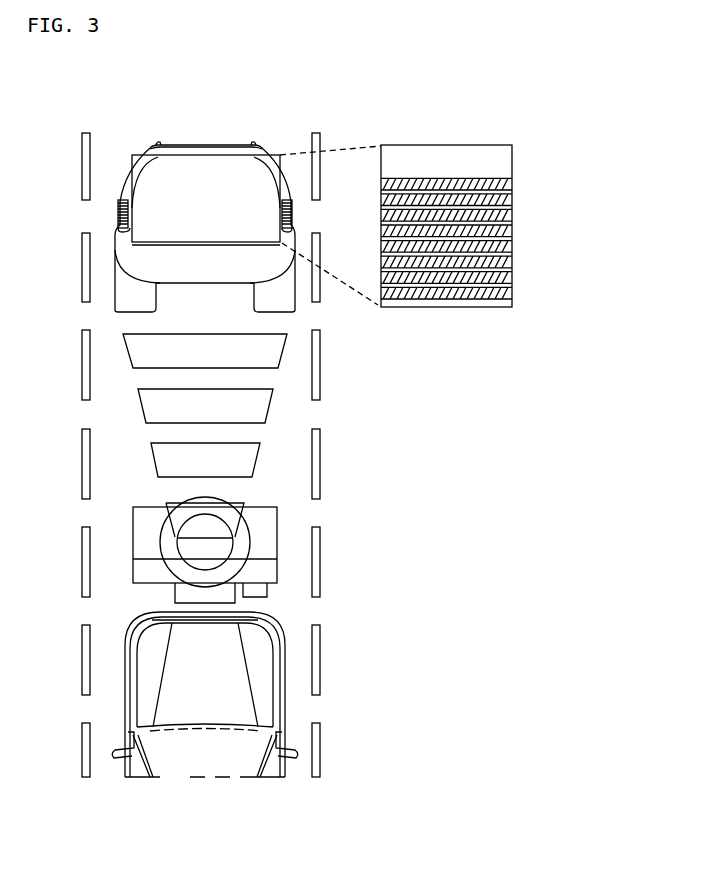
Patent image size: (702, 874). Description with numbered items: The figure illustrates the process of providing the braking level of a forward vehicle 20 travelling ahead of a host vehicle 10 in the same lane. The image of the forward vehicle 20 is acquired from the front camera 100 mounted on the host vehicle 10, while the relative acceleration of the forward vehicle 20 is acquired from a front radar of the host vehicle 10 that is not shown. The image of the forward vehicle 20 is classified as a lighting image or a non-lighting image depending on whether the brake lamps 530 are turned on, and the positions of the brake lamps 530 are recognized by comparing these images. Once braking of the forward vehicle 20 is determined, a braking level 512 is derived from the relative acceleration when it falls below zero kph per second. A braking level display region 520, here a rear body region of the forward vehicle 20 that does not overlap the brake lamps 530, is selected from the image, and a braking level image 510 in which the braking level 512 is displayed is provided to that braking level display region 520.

The host vehicle 10 is at (276, 614).
The forward vehicle 20 is at (130, 264).
The front camera 100 is at (278, 512).
The braking level image 510 is at (471, 202).
The braking level 512 is at (476, 178).
The braking level display region 520 is at (274, 152).
The brake lamps 530 is at (118, 213).